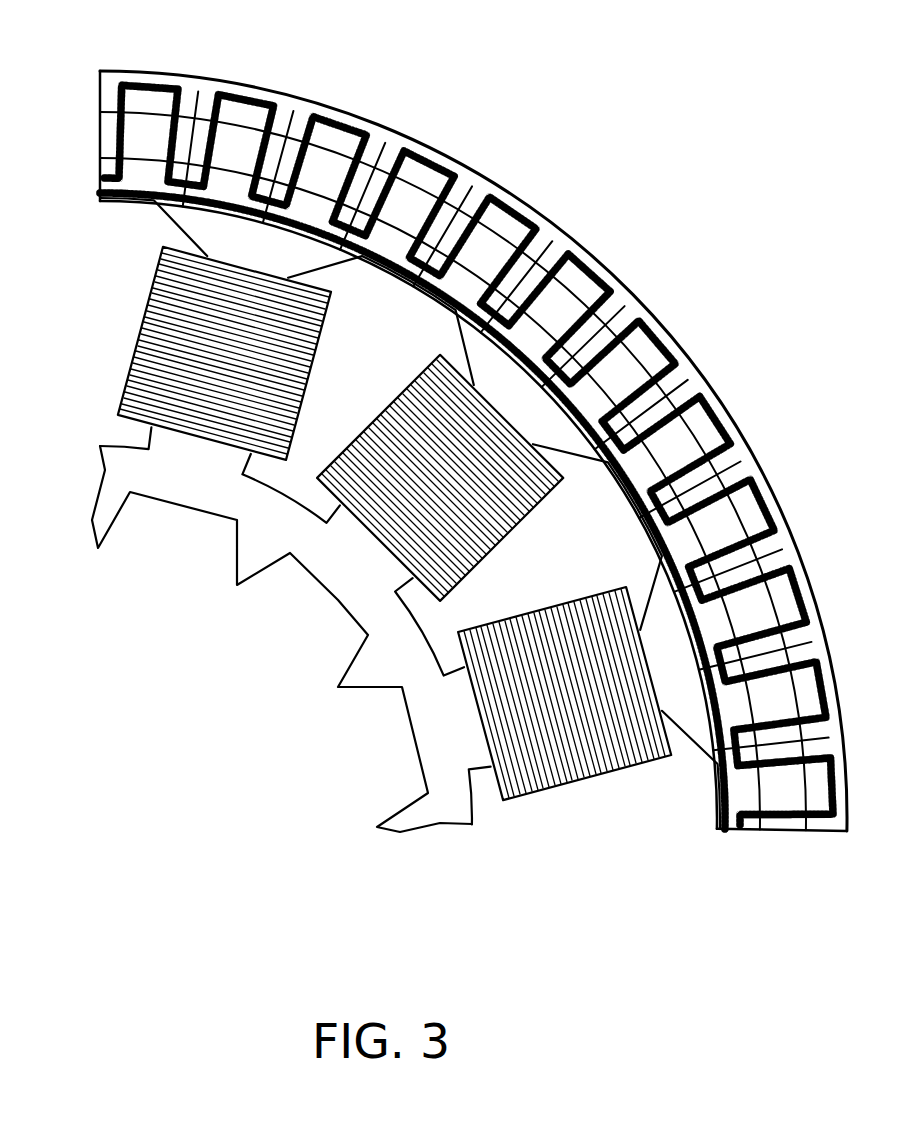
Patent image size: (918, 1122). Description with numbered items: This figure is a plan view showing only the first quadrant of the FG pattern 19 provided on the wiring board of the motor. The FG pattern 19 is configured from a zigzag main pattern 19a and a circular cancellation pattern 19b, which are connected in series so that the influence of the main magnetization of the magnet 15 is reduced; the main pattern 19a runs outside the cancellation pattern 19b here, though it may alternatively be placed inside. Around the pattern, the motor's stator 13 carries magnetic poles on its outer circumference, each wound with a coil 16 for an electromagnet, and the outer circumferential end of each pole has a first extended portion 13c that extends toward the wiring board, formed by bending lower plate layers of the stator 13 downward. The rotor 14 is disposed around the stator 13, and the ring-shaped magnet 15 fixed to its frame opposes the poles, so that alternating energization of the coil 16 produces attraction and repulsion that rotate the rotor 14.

The stator 13 is at (414, 546).
The first extended portion 13c is at (735, 700).
The rotor 14 is at (195, 90).
The magnet 15 is at (283, 150).
The coil 16 is at (133, 342).
The FG pattern 19 is at (466, 435).
The main pattern 19a is at (378, 140).
The cancellation pattern 19b is at (385, 235).